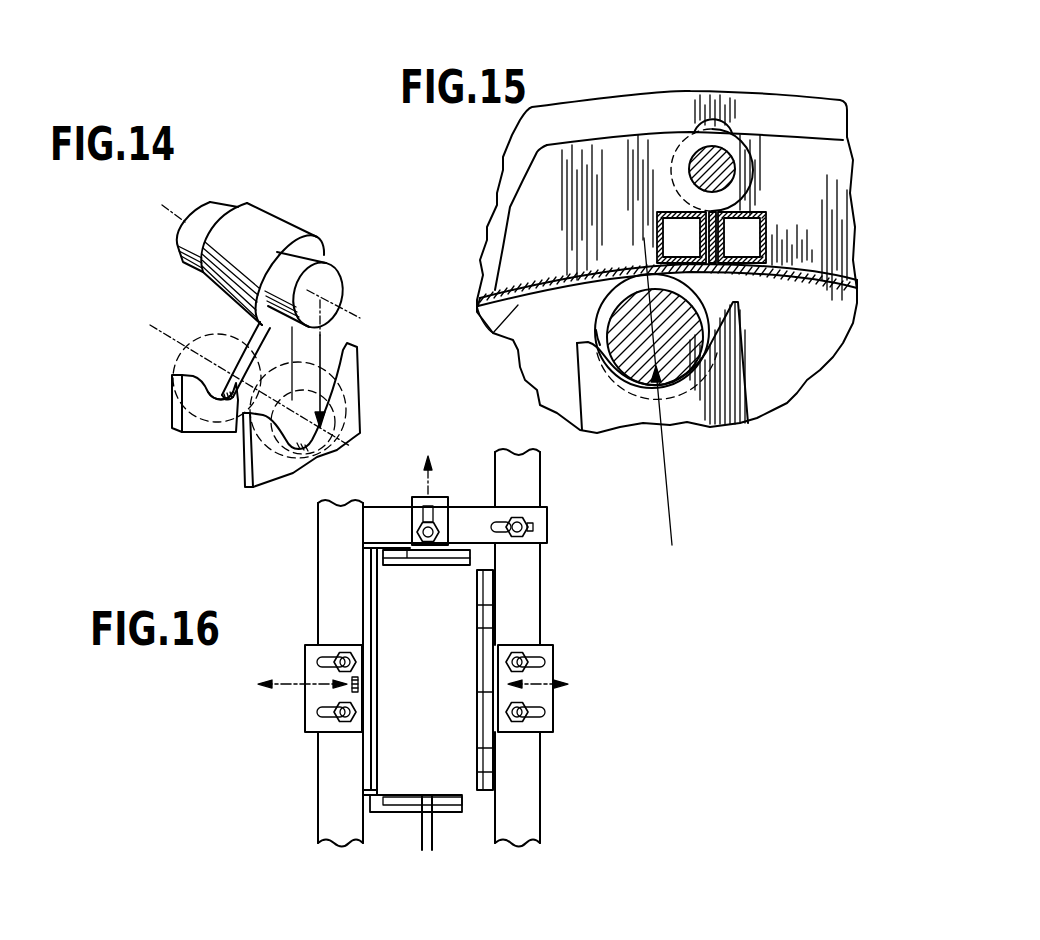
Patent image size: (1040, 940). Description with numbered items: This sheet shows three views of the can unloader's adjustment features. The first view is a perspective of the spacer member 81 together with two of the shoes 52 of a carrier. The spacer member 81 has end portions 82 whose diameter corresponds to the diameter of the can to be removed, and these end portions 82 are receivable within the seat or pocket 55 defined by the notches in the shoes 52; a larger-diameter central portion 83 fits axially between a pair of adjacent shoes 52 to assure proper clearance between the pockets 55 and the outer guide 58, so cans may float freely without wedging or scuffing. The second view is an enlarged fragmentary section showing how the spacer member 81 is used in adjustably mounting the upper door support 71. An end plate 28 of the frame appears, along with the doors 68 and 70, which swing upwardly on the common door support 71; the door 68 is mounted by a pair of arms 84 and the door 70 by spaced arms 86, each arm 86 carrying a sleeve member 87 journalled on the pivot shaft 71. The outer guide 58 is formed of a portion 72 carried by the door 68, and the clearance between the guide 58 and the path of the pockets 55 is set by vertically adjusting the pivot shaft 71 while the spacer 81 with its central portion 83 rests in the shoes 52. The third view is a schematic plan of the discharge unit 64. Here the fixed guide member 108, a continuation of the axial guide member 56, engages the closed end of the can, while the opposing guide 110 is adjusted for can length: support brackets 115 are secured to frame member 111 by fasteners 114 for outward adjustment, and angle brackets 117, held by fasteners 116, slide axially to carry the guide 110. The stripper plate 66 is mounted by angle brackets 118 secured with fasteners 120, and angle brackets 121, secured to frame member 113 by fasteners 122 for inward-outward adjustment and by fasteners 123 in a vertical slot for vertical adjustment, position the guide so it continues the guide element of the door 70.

In FIG. 15, the end plate 28 is at (675, 102).
In FIG. 14, the shoes 52 is at (360, 386).
In FIG. 15, the shoes 52 is at (714, 418).
In FIG. 14, the pocket 55 is at (236, 426).
In FIG. 15, the pocket 55 is at (596, 330).
In FIG. 16, the axial guide member 56 is at (433, 846).
In FIG. 15, the outer guide 58 is at (593, 273).
In FIG. 16, the discharge unit 64 is at (336, 776).
In FIG. 16, the stripper plate 66 is at (493, 604).
In FIG. 15, the door 68 is at (833, 152).
In FIG. 15, the door 70 is at (515, 250).
In FIG. 15, the door support 71 is at (690, 170).
In FIG. 15, the guide portion 72 is at (832, 283).
In FIG. 14, the spacer member 81 is at (319, 215).
In FIG. 15, the spacer member 81 is at (641, 392).
In FIG. 14, the end portions 82 is at (218, 200).
In FIG. 15, the end portions 82 is at (603, 370).
In FIG. 14, the central portion 83 is at (262, 212).
In FIG. 15, the central portion 83 is at (708, 296).
In FIG. 15, the arms 84 is at (787, 138).
In FIG. 15, the arms 86 is at (610, 150).
In FIG. 15, the sleeve member 87 is at (735, 167).
In FIG. 16, the fixed guide member 108 is at (403, 812).
In FIG. 16, the guide 110 is at (458, 450).
In FIG. 16, the frame member 111 is at (522, 471).
In FIG. 16, the frame member 113 is at (326, 561).
In FIG. 16, the fasteners 114 is at (530, 517).
In FIG. 16, the support brackets 115 is at (367, 512).
In FIG. 16, the fasteners 116 is at (439, 542).
In FIG. 16, the angle brackets 117 is at (449, 456).
In FIG. 16, the angle brackets 118 is at (554, 672).
In FIG. 16, the fasteners 120 is at (525, 658).
In FIG. 16, the angle brackets 121 is at (310, 716).
In FIG. 16, the fasteners 122 is at (343, 652).
In FIG. 16, the fasteners 123 is at (350, 688).